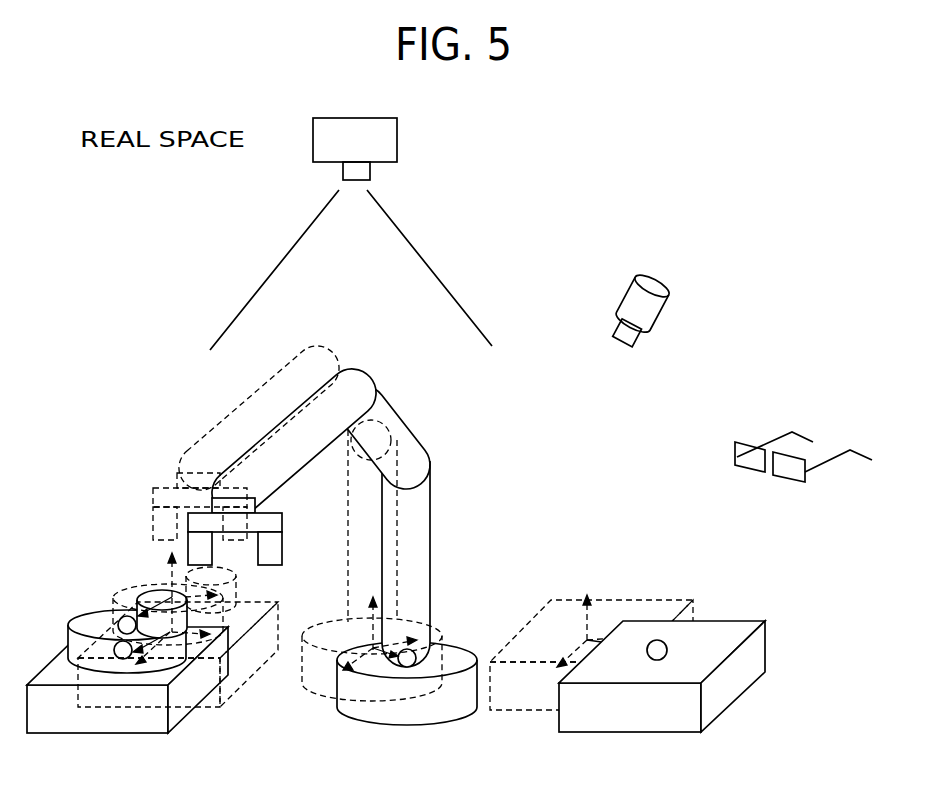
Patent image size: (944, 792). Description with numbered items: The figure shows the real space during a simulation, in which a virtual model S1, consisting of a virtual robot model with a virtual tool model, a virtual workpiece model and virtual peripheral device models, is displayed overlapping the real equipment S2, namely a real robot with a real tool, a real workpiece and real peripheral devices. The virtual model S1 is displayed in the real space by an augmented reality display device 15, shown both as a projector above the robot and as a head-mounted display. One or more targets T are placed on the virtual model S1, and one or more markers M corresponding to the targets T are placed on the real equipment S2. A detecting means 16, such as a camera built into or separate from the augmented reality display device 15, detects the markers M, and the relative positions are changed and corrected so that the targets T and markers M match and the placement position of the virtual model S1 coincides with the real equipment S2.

The augmented reality display device 15 is at (398, 142).
The detecting means 16 is at (670, 292).
The virtual model S1 is at (218, 418).
The real equipment S2 is at (426, 453).
The target T is at (593, 601).
The marker M is at (666, 651).